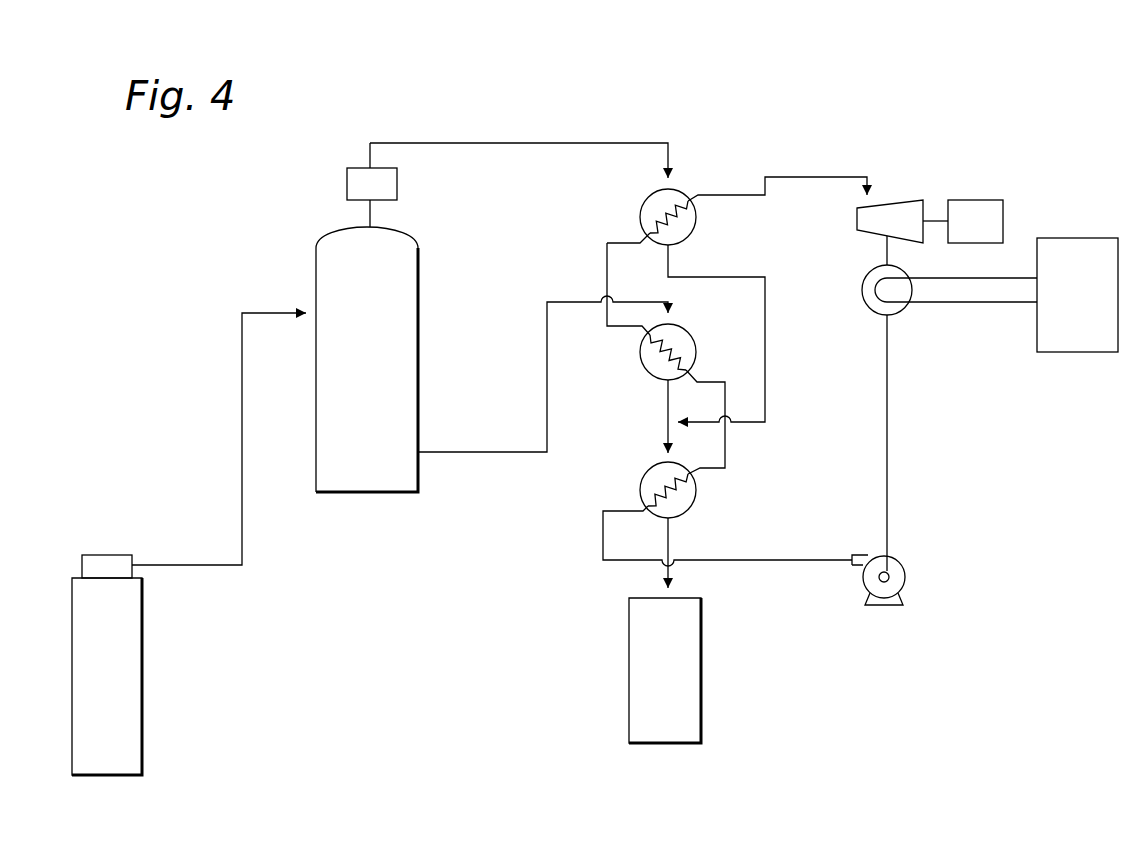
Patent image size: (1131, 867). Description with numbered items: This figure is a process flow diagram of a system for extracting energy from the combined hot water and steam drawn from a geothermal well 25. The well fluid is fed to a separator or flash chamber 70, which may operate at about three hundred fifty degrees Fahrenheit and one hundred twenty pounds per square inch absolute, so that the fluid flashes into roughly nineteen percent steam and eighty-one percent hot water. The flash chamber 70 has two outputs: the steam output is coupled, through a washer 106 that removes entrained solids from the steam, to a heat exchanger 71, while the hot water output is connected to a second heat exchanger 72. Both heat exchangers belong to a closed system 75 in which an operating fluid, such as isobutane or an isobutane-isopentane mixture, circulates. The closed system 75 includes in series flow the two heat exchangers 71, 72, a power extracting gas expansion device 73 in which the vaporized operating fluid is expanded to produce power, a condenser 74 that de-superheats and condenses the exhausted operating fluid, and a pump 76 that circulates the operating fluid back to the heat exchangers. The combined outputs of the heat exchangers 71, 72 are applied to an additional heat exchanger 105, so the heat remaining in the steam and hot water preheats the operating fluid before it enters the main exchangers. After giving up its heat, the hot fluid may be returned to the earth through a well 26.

The geothermal well 25 is at (133, 666).
The well 26 is at (696, 666).
The separator or flash chamber 70 is at (402, 284).
The heat exchanger 71 is at (696, 221).
The second heat exchanger 72 is at (690, 332).
The power extracting gas expansion device 73 is at (895, 205).
The condenser 74 is at (900, 310).
The closed system 75 is at (797, 254).
The pump 76 is at (905, 586).
The additional heat exchanger 105 is at (694, 502).
The washer 106 is at (397, 182).